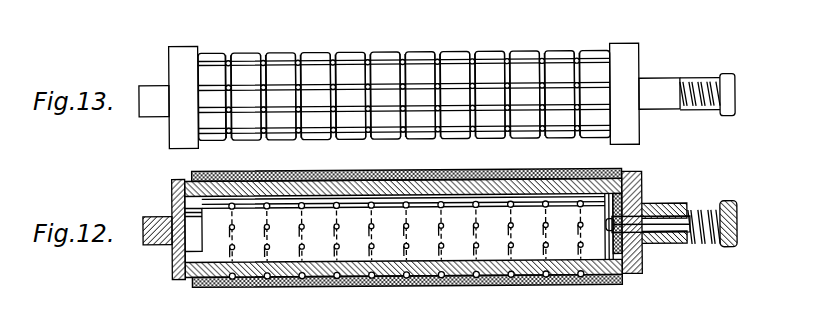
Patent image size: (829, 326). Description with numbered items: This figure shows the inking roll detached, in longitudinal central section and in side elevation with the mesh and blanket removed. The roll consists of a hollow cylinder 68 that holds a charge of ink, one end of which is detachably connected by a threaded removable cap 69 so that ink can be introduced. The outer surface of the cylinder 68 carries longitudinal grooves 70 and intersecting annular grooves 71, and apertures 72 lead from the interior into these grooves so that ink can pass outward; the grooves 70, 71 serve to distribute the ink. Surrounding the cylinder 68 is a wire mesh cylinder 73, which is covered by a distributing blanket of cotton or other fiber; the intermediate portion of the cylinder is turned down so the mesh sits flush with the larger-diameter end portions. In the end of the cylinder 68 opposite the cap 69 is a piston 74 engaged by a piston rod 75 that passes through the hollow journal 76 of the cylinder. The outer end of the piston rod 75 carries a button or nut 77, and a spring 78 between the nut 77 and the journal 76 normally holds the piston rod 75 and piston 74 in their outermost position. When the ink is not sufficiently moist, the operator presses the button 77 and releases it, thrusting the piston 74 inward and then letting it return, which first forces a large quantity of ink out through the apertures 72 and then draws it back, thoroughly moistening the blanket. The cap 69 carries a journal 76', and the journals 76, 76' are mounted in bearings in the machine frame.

In FIG. 13, the hollow cylinder 68 is at (408, 85).
In FIG. 12, the hollow cylinder 68 is at (412, 228).
In FIG. 12, the removable cap 69 is at (173, 198).
In FIG. 13, the longitudinal grooves 70 is at (325, 110).
In FIG. 12, the longitudinal grooves 70 is at (403, 203).
In FIG. 13, the annular grooves 71 is at (333, 54).
In FIG. 12, the annular grooves 71 is at (516, 200).
In FIG. 13, the apertures 72 is at (334, 128).
In FIG. 12, the apertures 72 is at (290, 212).
In FIG. 12, the wire mesh cylinder 73 is at (556, 278).
In FIG. 12, the piston 74 is at (646, 203).
In FIG. 12, the piston rod 75 is at (676, 228).
In FIG. 13, the hollow journal 76 is at (659, 105).
In FIG. 12, the hollow journal 76 is at (661, 264).
In FIG. 13, the journal 76' is at (152, 112).
In FIG. 12, the journal 76' is at (154, 244).
In FIG. 13, the button or nut 77 is at (727, 95).
In FIG. 12, the button or nut 77 is at (728, 206).
In FIG. 13, the spring 78 is at (700, 94).
In FIG. 12, the spring 78 is at (705, 242).